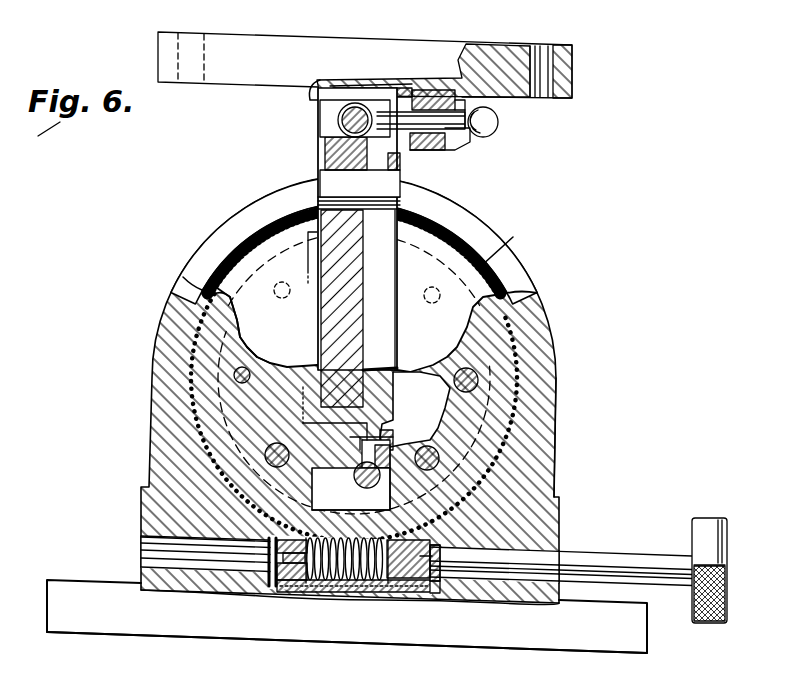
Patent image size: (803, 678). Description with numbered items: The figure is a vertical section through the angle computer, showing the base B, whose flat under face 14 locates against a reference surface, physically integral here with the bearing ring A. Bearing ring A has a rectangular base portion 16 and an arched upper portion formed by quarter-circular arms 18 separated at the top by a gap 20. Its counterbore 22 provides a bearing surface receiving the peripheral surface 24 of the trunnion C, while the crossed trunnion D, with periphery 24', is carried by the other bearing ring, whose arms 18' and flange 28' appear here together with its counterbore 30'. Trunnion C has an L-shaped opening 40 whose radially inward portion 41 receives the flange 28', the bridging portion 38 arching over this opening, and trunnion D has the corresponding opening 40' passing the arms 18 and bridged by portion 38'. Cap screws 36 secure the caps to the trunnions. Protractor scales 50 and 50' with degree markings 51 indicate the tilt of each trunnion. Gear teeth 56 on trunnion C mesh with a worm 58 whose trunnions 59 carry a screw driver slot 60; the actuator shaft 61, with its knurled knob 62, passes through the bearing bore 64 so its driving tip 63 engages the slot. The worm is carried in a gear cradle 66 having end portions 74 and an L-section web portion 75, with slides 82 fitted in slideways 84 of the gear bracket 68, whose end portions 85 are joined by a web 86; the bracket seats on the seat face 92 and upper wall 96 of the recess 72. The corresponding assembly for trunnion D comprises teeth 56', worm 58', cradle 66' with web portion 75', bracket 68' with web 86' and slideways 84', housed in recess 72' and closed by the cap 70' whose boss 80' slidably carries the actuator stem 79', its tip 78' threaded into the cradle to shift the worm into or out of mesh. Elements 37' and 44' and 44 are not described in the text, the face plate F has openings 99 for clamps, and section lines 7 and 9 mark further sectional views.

The section line 9- 9 is at (372, 22).
The section line 7- 7 is at (100, 364).
The face plate F is at (577, 62).
The gear cradle 66' is at (423, 70).
The recess 72' is at (478, 71).
The slideways 84' is at (492, 77).
The gear bracket 68' is at (318, 74).
The web 86' is at (371, 70).
The web portion 75' is at (351, 97).
The rectangular base portion 16 is at (142, 506).
The quarter-circular arms 18 is at (354, 238).
The peripheral surface 24 is at (387, 287).
The trunnion C is at (246, 352).
The protractor scale 50 is at (354, 278).
The protractor scale 50' is at (357, 262).
The counterbore 22 is at (527, 350).
The end portions 85 is at (418, 538).
The scale markings 51 is at (500, 262).
The bearing ring A is at (540, 272).
The gear teeth 56 is at (444, 443).
The trunnion D is at (360, 347).
The opening 40' is at (322, 280).
The gap 20 is at (400, 203).
The block 44 is at (360, 183).
The bridging portion 38' is at (311, 153).
The key 37' is at (416, 163).
The gear teeth 56' is at (331, 128).
The worm 58' is at (325, 122).
The tip 78' is at (421, 119).
The actuator stem 79' is at (502, 125).
The gear bracket cap 70' is at (445, 151).
The boss 80' is at (462, 138).
The portion 41 is at (396, 418).
The cap screws 36 is at (276, 443).
The opening 40 is at (423, 446).
The flange 28' is at (371, 425).
The counterbore 30' is at (393, 434).
The periphery 24' is at (335, 440).
The arms 18' is at (334, 486).
The pivot 44' is at (358, 483).
The bridging portion 38 is at (351, 489).
The bearing bore 64 is at (141, 559).
The screw driver slot 60 is at (262, 561).
The upper wall 96 is at (265, 537).
The recess 72 is at (236, 578).
The gear bracket 68 is at (281, 578).
The seat face 92 is at (285, 566).
The worm 58 is at (345, 587).
The end portions 74 is at (400, 580).
The web 86 is at (353, 608).
The web portion 75 is at (354, 602).
The trunnions 59 is at (305, 585).
The gear cradle 66 is at (347, 577).
The slides 82 is at (438, 586).
The slideways 84 is at (457, 606).
The driving tip 63 is at (458, 562).
The openings 99 is at (434, 560).
The actuator shaft 61 is at (638, 552).
The knurled knob 62 is at (708, 520).
The flat under face 14 is at (542, 650).
The base B is at (45, 618).